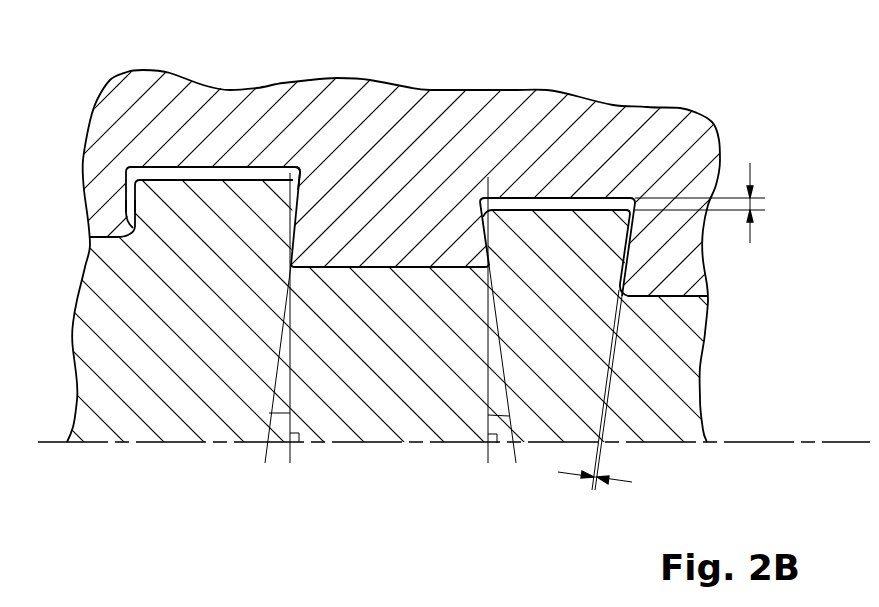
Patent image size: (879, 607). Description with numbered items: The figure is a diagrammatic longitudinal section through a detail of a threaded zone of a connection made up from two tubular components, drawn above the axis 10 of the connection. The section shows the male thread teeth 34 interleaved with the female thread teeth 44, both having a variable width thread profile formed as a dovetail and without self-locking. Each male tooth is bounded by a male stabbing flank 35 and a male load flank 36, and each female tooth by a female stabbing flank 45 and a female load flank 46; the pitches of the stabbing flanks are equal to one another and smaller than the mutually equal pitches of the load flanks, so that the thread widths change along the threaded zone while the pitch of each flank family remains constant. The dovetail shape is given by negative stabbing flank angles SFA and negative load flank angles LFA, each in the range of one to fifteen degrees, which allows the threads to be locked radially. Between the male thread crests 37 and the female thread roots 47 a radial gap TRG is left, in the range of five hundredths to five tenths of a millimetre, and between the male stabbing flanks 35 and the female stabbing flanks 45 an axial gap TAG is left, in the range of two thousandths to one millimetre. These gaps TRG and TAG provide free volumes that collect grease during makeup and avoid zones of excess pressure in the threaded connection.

The axis of the connection 10 is at (753, 442).
The male thread flanks (teeth) 34 is at (195, 230).
The male stabbing flanks 35 is at (292, 230).
The male load flanks 36 is at (140, 213).
The male thread crests 37 is at (203, 183).
The female thread flanks (teeth) 44 is at (393, 230).
The female stabbing flanks 45 is at (300, 193).
The female load flanks 46 is at (480, 265).
The female thread roots 47 is at (343, 267).
The stabbing flank angle SFA is at (274, 335).
The load flank angle LFA is at (503, 338).
The radial gap TRG is at (646, 326).
The axial gap TAG is at (614, 470).